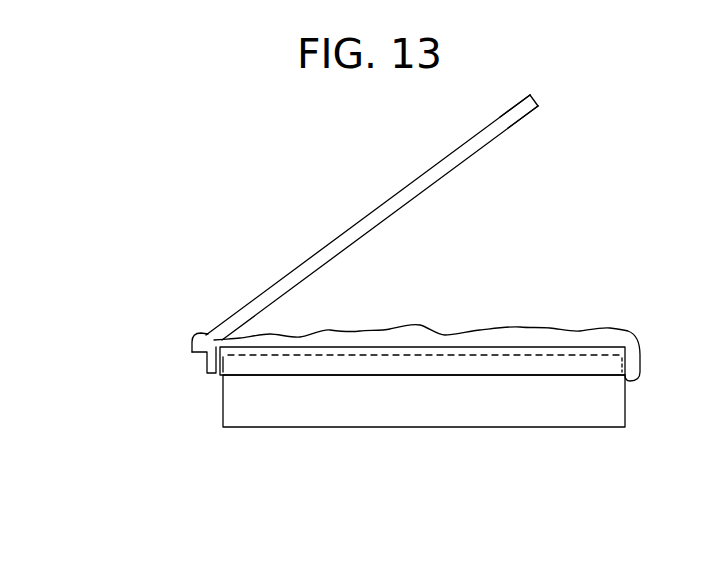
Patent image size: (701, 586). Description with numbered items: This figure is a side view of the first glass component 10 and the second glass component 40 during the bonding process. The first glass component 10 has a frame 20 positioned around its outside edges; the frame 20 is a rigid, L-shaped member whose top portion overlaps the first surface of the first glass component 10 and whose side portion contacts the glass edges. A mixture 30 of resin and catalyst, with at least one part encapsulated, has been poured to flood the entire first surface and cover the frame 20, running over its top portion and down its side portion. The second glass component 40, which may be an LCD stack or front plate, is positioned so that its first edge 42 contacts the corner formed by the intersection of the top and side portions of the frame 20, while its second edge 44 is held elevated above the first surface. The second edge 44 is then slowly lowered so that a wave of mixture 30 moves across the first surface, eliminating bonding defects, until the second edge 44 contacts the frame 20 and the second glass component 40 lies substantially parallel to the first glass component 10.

The first glass component 10 is at (258, 417).
The frame 20 is at (243, 362).
The mixture 30 is at (517, 337).
The second glass component 40 is at (353, 225).
The first edge 42 is at (192, 340).
The second edge 44 is at (536, 101).